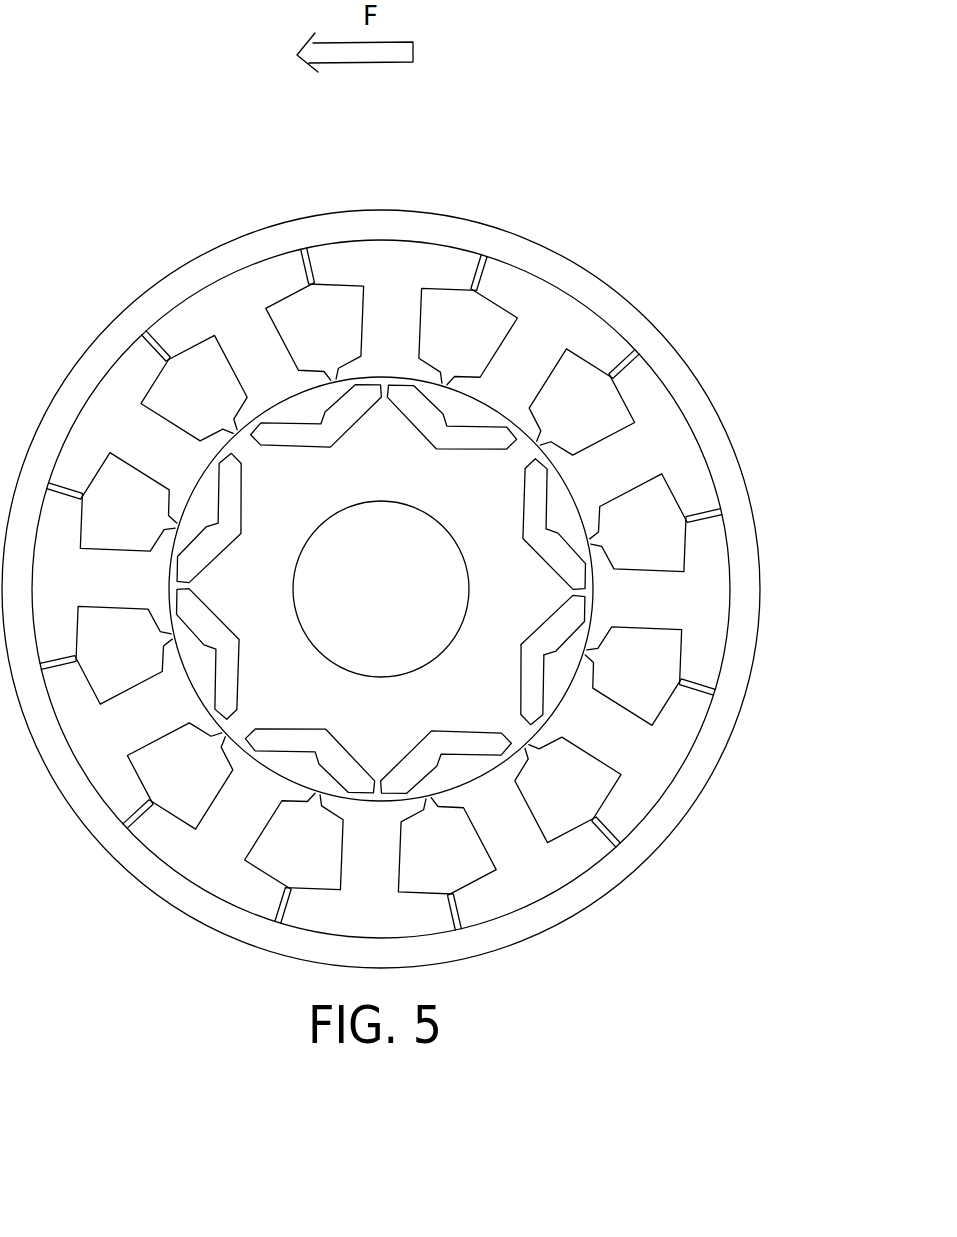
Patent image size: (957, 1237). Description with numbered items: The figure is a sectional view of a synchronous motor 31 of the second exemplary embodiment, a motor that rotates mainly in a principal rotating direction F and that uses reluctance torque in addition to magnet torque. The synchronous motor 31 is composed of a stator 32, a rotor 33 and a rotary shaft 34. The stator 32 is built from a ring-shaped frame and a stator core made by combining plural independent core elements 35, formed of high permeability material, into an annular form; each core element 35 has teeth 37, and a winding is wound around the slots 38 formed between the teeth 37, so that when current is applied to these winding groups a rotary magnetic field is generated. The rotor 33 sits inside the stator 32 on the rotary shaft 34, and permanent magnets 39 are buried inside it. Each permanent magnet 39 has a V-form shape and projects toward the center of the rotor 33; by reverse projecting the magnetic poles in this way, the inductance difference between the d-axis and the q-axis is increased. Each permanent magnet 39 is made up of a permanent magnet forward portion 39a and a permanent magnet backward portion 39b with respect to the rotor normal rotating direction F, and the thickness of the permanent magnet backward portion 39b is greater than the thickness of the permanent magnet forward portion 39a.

The synchronous motor 31 is at (485, 217).
The stator 32 is at (570, 320).
The rotor 33 is at (567, 517).
The rotary shaft 34 is at (410, 632).
The core element 35 is at (237, 302).
The teeth 37 is at (655, 606).
The slot 38 is at (663, 551).
The permanent magnet 39 is at (518, 632).
The permanent magnet forward portion 39a is at (557, 635).
The permanent magnet backward portion 39b is at (537, 690).